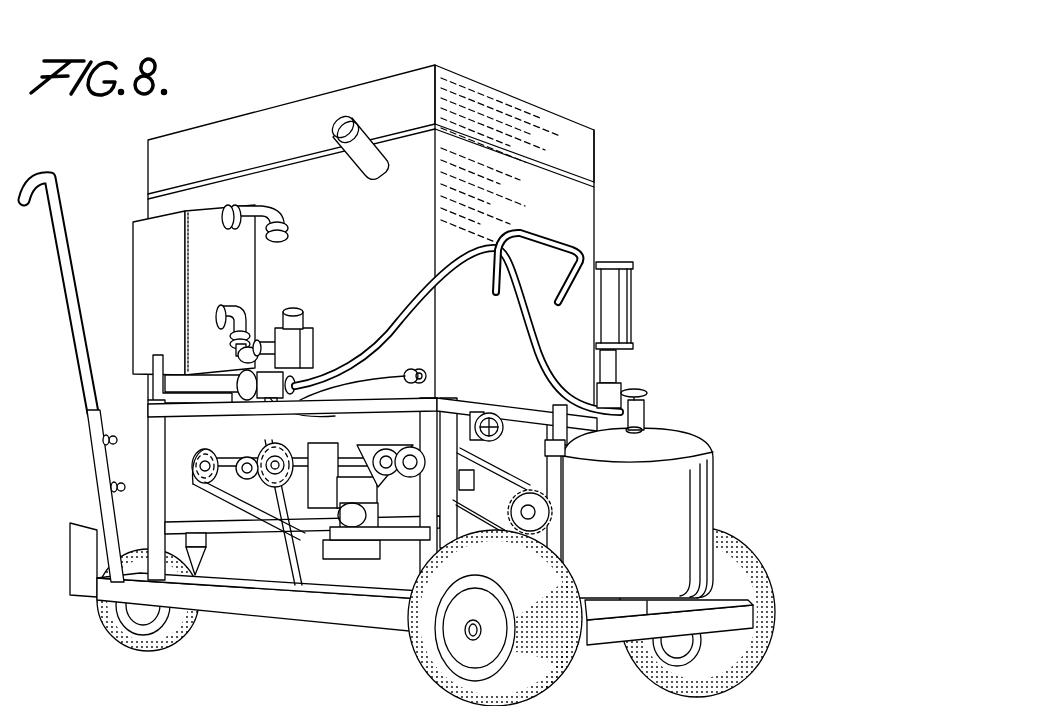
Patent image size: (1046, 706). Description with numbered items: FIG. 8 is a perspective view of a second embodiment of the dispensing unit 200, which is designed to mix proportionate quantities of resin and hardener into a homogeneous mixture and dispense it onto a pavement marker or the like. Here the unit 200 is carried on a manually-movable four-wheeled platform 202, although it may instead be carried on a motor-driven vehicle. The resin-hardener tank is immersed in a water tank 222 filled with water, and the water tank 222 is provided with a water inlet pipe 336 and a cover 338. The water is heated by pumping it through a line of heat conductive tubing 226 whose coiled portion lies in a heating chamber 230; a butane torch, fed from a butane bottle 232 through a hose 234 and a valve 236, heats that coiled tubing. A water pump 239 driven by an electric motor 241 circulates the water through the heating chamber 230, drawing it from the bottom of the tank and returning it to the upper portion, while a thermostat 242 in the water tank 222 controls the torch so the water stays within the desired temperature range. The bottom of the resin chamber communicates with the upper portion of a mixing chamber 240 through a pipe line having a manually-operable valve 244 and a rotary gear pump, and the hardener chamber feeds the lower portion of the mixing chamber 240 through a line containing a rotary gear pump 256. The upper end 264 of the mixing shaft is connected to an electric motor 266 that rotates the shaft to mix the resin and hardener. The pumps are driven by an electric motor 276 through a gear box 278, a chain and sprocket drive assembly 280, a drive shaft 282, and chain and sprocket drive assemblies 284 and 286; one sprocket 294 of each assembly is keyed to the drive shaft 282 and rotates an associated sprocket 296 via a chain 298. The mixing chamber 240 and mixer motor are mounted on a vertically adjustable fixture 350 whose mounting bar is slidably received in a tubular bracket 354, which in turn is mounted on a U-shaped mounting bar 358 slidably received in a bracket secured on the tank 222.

The unit 200 is at (627, 158).
The four-wheeled platform 202 is at (303, 623).
The water tank 222 is at (585, 212).
The heat conductive tubing 226 is at (240, 213).
The heating chamber 230 is at (145, 250).
The butane bottle 232 is at (716, 468).
The hose 234 is at (421, 273).
The valve 236 is at (268, 382).
The water pump 239 is at (313, 333).
The mixing chamber 240 is at (612, 393).
The electric motor 241 is at (303, 316).
The thermostat 242 is at (424, 370).
The manually-operable valve 244 is at (480, 416).
The rotary gear pump 256 is at (348, 524).
The upper end of mixing shaft 264 is at (599, 291).
The electric motor 266 is at (617, 368).
The electric motor 276 is at (382, 500).
The gear box 278 is at (390, 518).
The chain and sprocket drive assembly 280 is at (250, 487).
The drive shaft 282 is at (343, 456).
The chain and sprocket drive assembly 284 is at (558, 527).
The chain and sprocket drive assembly 286 is at (190, 462).
The sprocket 294 is at (212, 437).
The sprocket 296 is at (540, 500).
The chain 298 is at (240, 512).
The water inlet pipe 336 is at (380, 168).
The cover 338 is at (537, 117).
The vertically adjustable fixture 350 is at (590, 425).
The tubular bracket 354 is at (558, 412).
The U-shaped mounting bar 358 is at (553, 444).